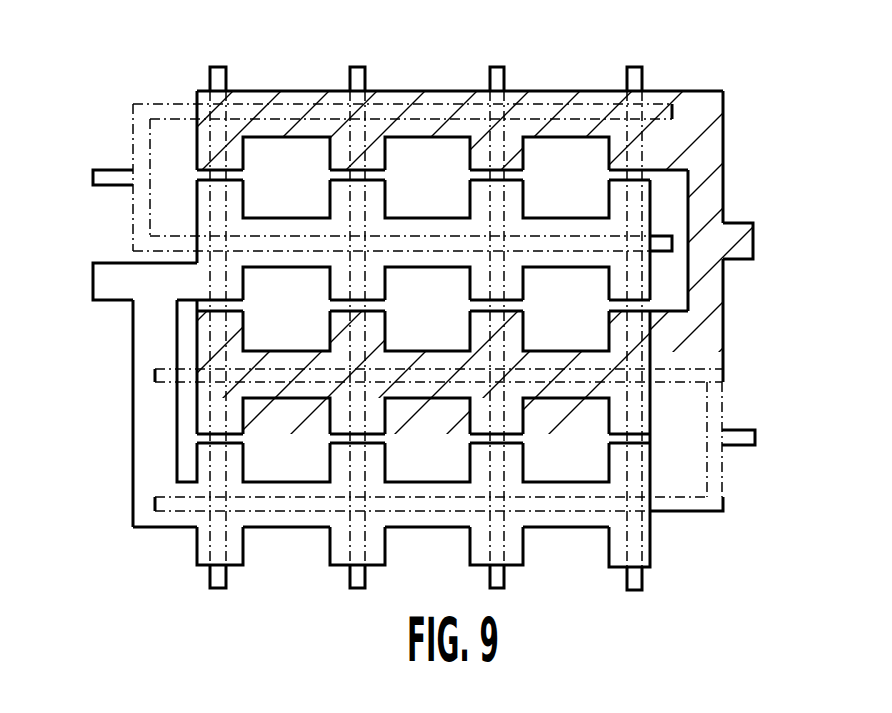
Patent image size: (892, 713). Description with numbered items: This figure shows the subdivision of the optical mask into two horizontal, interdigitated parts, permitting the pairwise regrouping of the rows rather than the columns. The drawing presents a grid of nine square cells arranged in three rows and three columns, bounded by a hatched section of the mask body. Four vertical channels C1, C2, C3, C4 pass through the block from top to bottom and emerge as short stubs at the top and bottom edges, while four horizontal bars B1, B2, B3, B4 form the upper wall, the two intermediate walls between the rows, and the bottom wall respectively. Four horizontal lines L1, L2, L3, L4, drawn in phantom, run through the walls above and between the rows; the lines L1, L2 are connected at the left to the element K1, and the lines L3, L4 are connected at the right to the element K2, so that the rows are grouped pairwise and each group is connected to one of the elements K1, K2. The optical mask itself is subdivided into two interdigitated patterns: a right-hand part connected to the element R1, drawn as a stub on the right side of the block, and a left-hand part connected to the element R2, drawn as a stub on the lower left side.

The column channel connection C1 is at (218, 67).
The column channel connection C2 is at (357, 67).
The column channel connection C3 is at (497, 67).
The column channel connection C4 is at (635, 67).
The block bar B1 is at (575, 91).
The block bar B2 is at (575, 227).
The block bar B3 is at (577, 353).
The block bar B4 is at (588, 522).
The line channel L1 is at (132, 104).
The line channel L2 is at (132, 236).
The line channel L3 is at (723, 372).
The line channel L4 is at (723, 498).
The element K1 is at (108, 168).
The element K2 is at (745, 430).
The element R1 is at (750, 258).
The element R2 is at (112, 298).